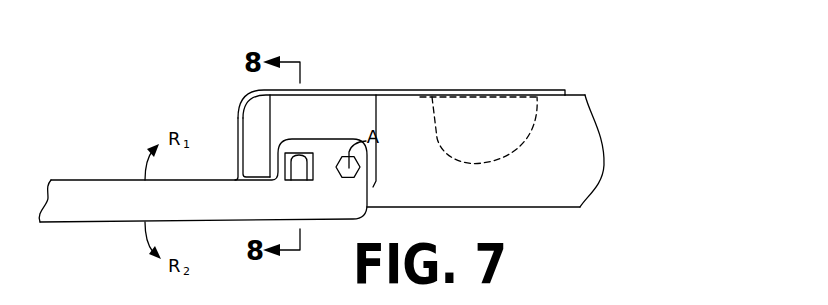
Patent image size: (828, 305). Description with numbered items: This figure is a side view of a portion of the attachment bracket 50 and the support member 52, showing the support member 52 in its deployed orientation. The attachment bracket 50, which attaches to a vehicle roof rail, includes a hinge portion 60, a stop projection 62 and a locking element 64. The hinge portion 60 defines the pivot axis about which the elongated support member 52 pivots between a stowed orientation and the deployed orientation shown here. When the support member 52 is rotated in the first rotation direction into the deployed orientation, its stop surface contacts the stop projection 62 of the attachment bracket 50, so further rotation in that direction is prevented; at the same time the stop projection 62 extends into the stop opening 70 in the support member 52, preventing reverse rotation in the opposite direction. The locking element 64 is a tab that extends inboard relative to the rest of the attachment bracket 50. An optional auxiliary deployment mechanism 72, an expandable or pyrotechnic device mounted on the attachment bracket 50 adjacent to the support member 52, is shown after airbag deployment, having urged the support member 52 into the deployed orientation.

The attachment bracket 50 is at (450, 90).
The support member 52 is at (118, 202).
The hinge portion 60 is at (337, 103).
The stop projection 62 is at (240, 183).
The locking element 64 is at (289, 170).
The stop opening 70 is at (292, 175).
The auxiliary deployment mechanism 72 is at (513, 107).